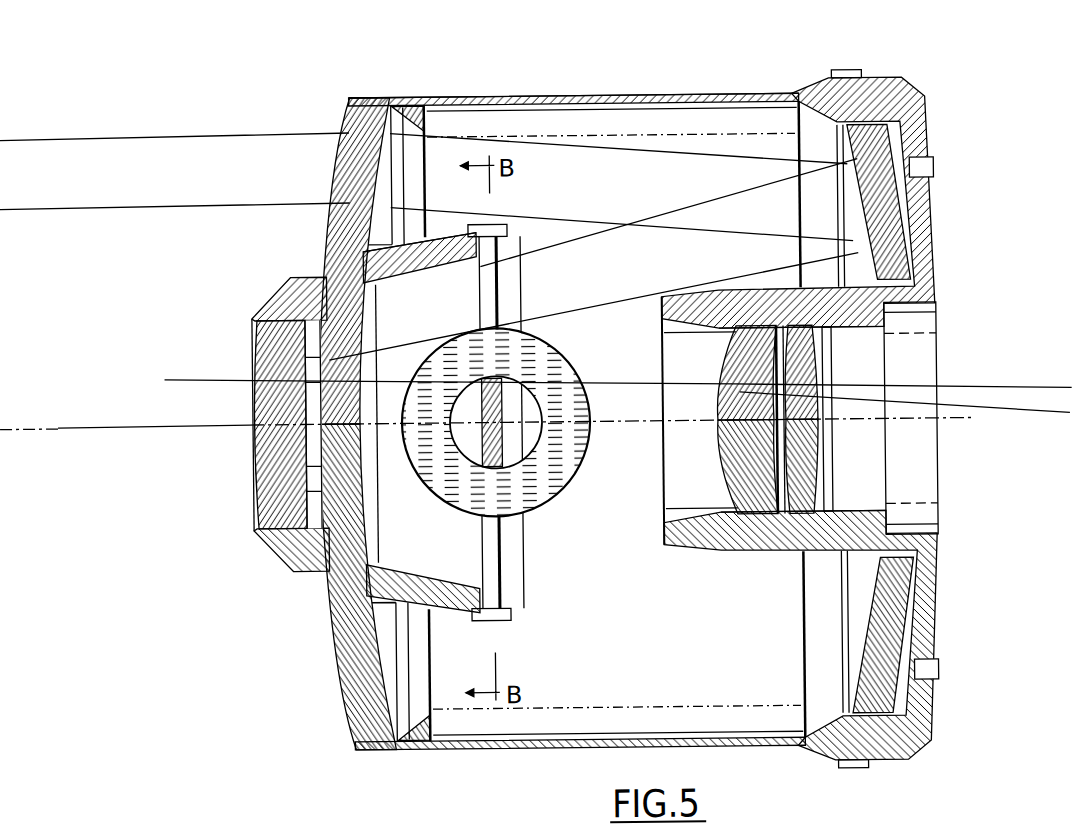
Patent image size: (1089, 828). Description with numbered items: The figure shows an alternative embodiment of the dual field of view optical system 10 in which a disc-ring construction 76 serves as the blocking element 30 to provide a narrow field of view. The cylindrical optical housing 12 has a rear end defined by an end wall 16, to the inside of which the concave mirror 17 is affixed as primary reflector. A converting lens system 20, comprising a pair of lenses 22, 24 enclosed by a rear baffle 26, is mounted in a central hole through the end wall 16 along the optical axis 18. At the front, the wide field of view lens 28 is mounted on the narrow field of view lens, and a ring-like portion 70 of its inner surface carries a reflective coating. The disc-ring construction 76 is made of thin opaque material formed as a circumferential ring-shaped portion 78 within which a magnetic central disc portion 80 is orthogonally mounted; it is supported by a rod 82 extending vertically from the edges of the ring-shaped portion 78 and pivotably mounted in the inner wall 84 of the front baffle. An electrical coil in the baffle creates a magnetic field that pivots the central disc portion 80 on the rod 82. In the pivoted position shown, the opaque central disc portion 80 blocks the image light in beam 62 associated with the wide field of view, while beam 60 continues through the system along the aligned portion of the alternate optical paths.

The dual field of view optical system 10 is at (950, 27).
The optical housing 12 is at (487, 96).
The end wall 16 is at (928, 172).
The concave mirror 17 is at (890, 150).
The optical axis 18 is at (57, 424).
The converting lens system 20 is at (702, 593).
The lens 22 is at (752, 550).
The lens 24 is at (787, 550).
The rear baffle 26 is at (673, 529).
The wide field of view lens 28 is at (265, 436).
The blocking element 30 is at (620, 546).
The beam 60 is at (162, 129).
The beam 62 is at (166, 374).
The ring-like portion 70 is at (321, 298).
The disc-ring construction 76 is at (563, 488).
The circumferential ring-shaped portion 78 is at (542, 492).
The central disc portion 80 is at (482, 441).
The rod 82 is at (502, 536).
The inner wall 84 is at (437, 613).